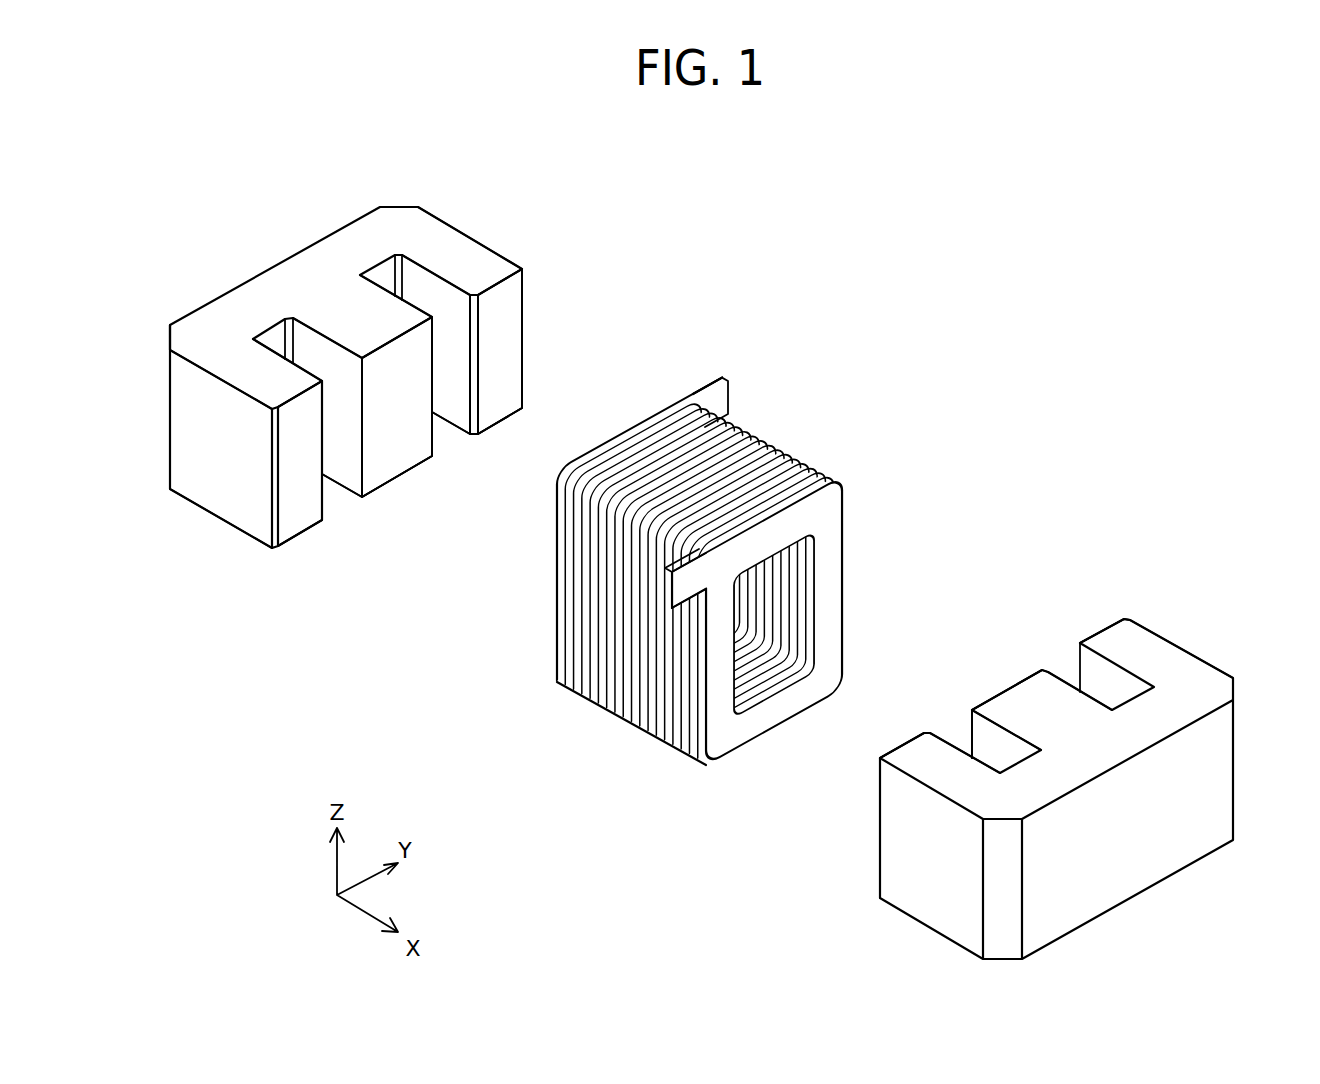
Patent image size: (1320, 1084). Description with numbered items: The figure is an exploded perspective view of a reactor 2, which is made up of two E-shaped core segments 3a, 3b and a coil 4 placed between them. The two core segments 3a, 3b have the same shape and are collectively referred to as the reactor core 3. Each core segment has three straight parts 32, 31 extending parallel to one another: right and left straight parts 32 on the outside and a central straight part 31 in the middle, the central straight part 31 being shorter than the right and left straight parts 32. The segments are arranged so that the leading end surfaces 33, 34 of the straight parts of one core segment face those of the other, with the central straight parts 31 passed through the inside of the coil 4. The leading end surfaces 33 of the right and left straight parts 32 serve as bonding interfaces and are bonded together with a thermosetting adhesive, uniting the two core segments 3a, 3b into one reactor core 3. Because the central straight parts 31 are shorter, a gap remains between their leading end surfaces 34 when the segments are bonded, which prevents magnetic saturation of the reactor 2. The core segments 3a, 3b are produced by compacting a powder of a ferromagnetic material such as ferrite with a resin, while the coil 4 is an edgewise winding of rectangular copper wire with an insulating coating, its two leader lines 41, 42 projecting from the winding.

The reactor 2 is at (1080, 303).
The reactor core 3 is at (701, 580).
The core segment 3a is at (286, 277).
The core segment 3b is at (1127, 876).
The central straight part 31 is at (365, 320).
The right and left straight parts 32 is at (272, 380).
The leading end surfaces 33 is at (510, 393).
The leading end surfaces 34 is at (404, 455).
The coil 4 is at (752, 452).
The leader line 41 is at (707, 378).
The leader line 42 is at (692, 592).